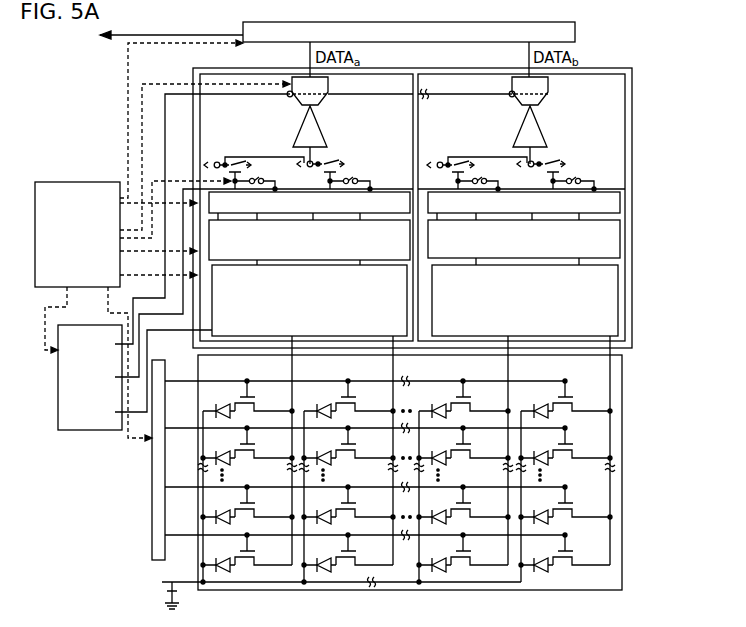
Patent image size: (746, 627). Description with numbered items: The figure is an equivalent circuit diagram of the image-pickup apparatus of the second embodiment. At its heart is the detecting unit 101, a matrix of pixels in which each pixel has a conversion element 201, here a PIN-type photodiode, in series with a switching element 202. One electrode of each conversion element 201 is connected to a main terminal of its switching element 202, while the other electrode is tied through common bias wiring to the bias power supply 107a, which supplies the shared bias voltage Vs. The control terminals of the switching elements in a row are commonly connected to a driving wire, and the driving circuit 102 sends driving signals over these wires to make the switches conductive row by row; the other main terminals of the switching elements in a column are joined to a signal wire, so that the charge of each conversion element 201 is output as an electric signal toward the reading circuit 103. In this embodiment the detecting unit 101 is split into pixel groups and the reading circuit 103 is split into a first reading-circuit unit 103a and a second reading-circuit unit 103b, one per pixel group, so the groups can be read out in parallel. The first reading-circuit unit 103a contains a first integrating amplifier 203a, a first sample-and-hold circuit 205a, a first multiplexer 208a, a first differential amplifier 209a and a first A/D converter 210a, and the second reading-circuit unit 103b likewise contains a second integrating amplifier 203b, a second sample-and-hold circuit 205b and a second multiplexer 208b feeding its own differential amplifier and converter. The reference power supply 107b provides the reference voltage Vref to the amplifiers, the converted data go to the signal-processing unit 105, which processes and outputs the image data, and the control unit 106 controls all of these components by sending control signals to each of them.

The detecting unit 101 is at (624, 476).
The driving circuit 102 is at (150, 535).
The reading circuit 103 is at (633, 67).
The first reading-circuit unit 103a is at (208, 110).
The second reading-circuit unit 103b is at (625, 128).
The signal-processing unit 105 is at (577, 27).
The control unit 106 is at (55, 180).
The bias power supply 107a is at (133, 595).
The reference power supply 107b is at (68, 432).
The conversion element 201 is at (538, 573).
The switching element 202 is at (569, 572).
The first integrating amplifier 203a is at (404, 315).
The second integrating amplifier 203b is at (615, 288).
The first sample-and-hold circuit 205a is at (404, 248).
The second sample-and-hold circuit 205b is at (618, 222).
The first multiplexer 208a is at (404, 203).
The second multiplexer 208b is at (618, 194).
The first differential amplifier 209a is at (321, 127).
The first A/D converter 210a is at (297, 105).